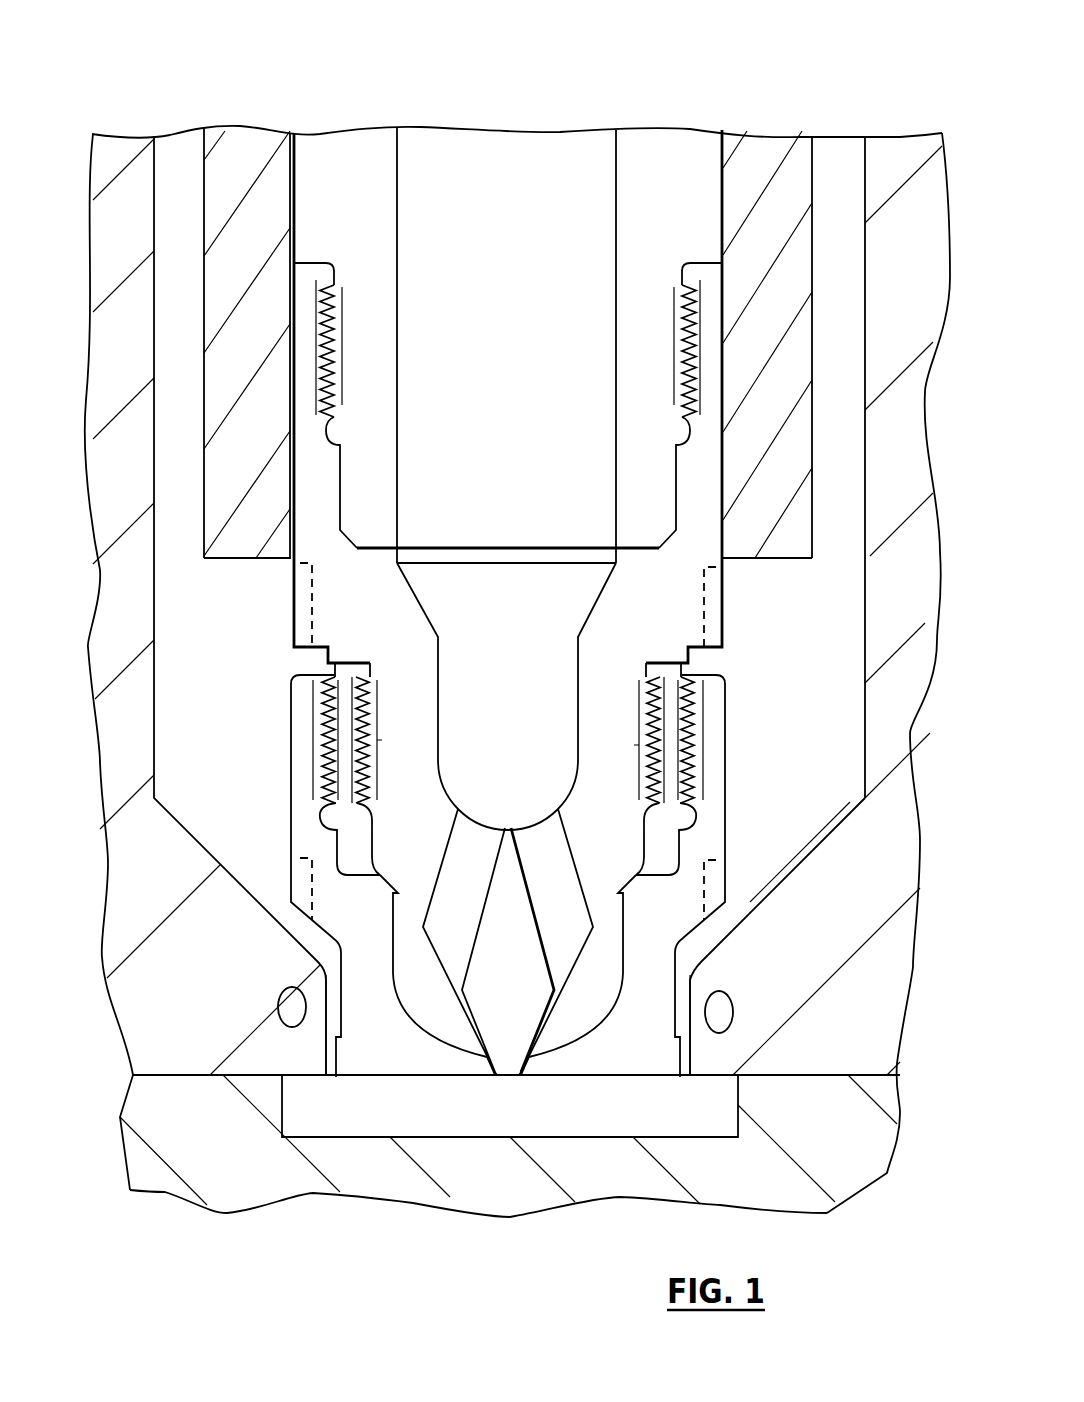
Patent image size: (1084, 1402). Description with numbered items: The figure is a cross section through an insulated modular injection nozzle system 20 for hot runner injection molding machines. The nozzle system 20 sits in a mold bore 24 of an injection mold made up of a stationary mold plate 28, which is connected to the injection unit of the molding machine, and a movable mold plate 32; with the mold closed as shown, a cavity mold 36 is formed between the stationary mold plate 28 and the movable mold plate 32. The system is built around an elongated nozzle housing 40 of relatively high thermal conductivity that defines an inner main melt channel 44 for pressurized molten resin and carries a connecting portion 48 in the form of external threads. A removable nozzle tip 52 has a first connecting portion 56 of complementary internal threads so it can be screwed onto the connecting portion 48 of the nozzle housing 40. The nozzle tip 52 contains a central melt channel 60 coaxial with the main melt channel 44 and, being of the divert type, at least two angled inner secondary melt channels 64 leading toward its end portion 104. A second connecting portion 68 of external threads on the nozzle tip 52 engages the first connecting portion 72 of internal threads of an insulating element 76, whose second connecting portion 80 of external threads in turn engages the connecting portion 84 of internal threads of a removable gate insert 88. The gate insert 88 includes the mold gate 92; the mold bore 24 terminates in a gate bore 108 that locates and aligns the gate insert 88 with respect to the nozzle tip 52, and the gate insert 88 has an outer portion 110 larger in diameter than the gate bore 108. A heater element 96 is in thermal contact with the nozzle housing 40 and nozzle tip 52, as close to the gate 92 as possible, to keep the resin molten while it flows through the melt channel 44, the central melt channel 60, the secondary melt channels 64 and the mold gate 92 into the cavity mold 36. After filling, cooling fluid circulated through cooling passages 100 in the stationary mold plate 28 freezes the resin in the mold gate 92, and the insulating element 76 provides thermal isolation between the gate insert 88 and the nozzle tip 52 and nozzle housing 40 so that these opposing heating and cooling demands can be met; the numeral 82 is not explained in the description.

The insulated modular injection nozzle system 20 is at (716, 84).
The mold bore 24 is at (164, 294).
The stationary mold plate 28 is at (110, 249).
The movable mold plate 32 is at (179, 1128).
The cavity mold 36 is at (616, 1131).
The nozzle housing 40 is at (323, 205).
The inner main melt channel 44 is at (512, 331).
The connecting portion 48 is at (342, 350).
The removable nozzle tip 52 is at (339, 606).
The first connecting portion 56 is at (318, 345).
The central melt channel 60 is at (521, 606).
The angled inner secondary melt channels 64 is at (446, 901).
The second connecting portion 68 is at (508, 740).
The first connecting portion 72 is at (348, 750).
The insulating element 76 is at (347, 830).
The second connecting portion 80 is at (343, 743).
The sleeve end 82 is at (337, 1050).
The connecting portion 84 is at (308, 742).
The removable gate insert 88 is at (298, 686).
The mold gate 92 is at (492, 1075).
The heater element 96 is at (233, 246).
The cooling passages 100 is at (290, 1006).
The end portion 104 is at (515, 1073).
The gate bore 108 is at (318, 1056).
The outer portion 110 is at (311, 916).